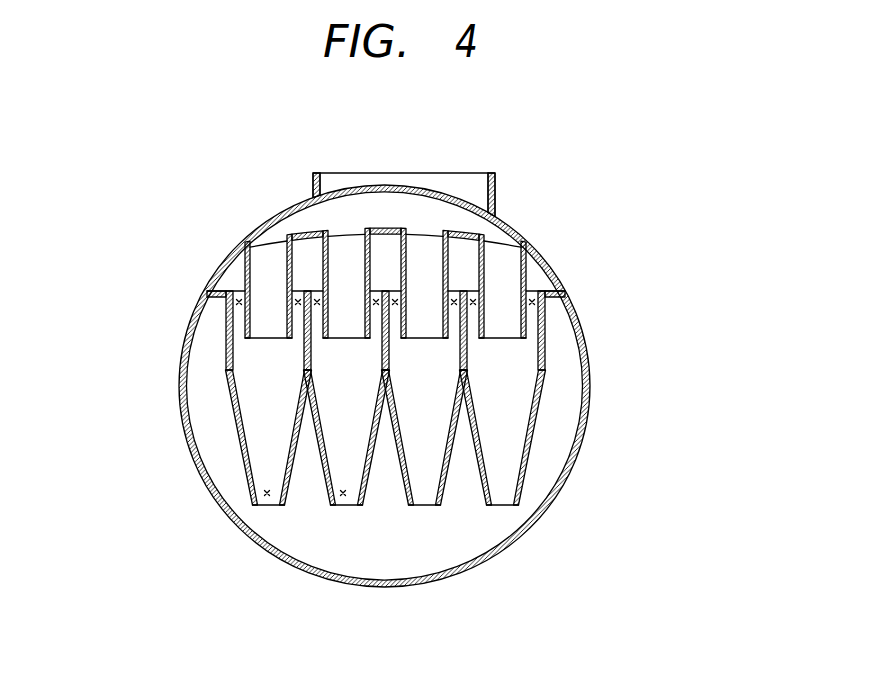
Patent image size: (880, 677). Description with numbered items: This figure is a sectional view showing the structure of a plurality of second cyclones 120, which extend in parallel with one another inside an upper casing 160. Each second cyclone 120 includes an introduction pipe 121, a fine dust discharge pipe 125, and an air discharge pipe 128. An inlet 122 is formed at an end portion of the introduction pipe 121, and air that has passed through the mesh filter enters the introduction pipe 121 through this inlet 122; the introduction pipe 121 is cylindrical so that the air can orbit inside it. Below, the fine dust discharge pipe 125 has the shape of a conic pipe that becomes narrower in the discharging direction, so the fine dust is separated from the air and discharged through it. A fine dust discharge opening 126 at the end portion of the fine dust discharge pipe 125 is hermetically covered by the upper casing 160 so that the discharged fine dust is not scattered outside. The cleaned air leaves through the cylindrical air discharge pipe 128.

The second cyclone 120 is at (386, 458).
The introduction pipe 121 is at (232, 333).
The inlet 122 is at (297, 300).
The fine dust discharge pipe 125 is at (233, 403).
The fine dust discharge opening 126 is at (333, 505).
The air discharge pipe 128 is at (222, 281).
The upper casing 160 is at (501, 547).